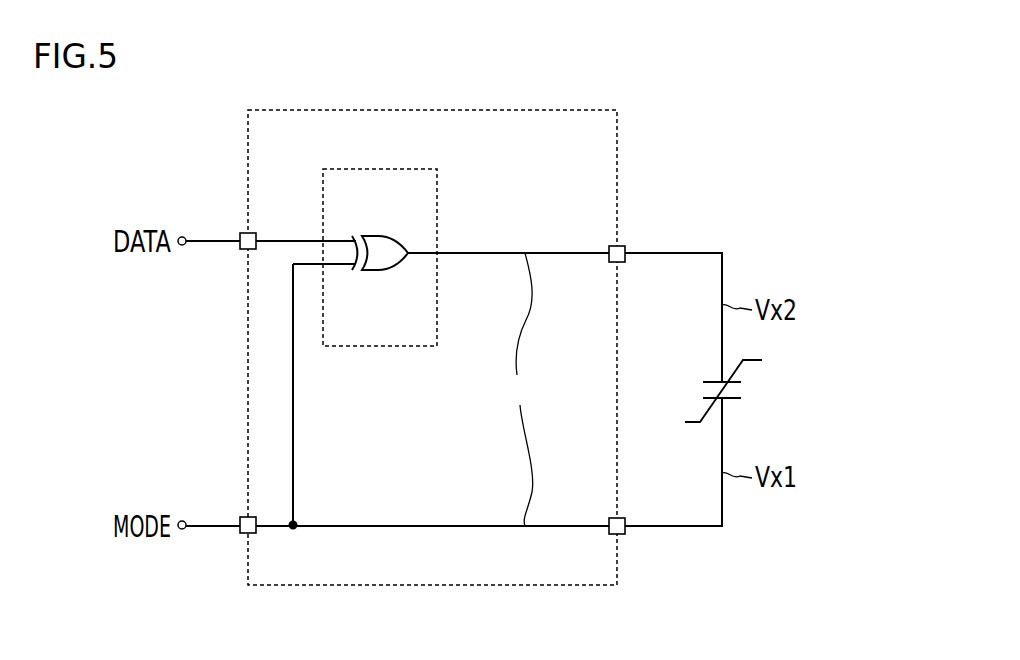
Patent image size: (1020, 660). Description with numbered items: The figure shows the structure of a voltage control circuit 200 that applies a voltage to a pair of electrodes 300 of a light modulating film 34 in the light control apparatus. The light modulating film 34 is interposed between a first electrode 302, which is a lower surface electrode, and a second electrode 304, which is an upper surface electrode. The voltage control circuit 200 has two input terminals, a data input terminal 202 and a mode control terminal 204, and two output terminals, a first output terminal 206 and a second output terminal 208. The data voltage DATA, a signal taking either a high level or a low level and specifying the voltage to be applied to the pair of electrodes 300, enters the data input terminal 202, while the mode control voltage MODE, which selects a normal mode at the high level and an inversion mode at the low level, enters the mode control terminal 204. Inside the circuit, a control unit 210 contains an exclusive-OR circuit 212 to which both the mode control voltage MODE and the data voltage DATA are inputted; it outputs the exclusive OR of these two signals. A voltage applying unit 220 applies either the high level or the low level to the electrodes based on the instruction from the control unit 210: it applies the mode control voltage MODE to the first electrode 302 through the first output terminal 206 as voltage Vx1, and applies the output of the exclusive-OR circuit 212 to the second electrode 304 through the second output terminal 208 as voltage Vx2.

The voltage control circuit 200 is at (427, 587).
The data input terminal 202 is at (242, 250).
The mode control terminal 204 is at (242, 535).
The first output terminal 206 is at (623, 535).
The second output terminal 208 is at (620, 246).
The control unit 210 is at (381, 348).
The exclusive-OR circuit 212 is at (386, 273).
The voltage applying unit 220 is at (519, 389).
The pair of electrodes 300 is at (775, 399).
The first electrode 302 is at (745, 400).
The second electrode 304 is at (745, 378).
The light modulating film 34 is at (700, 389).